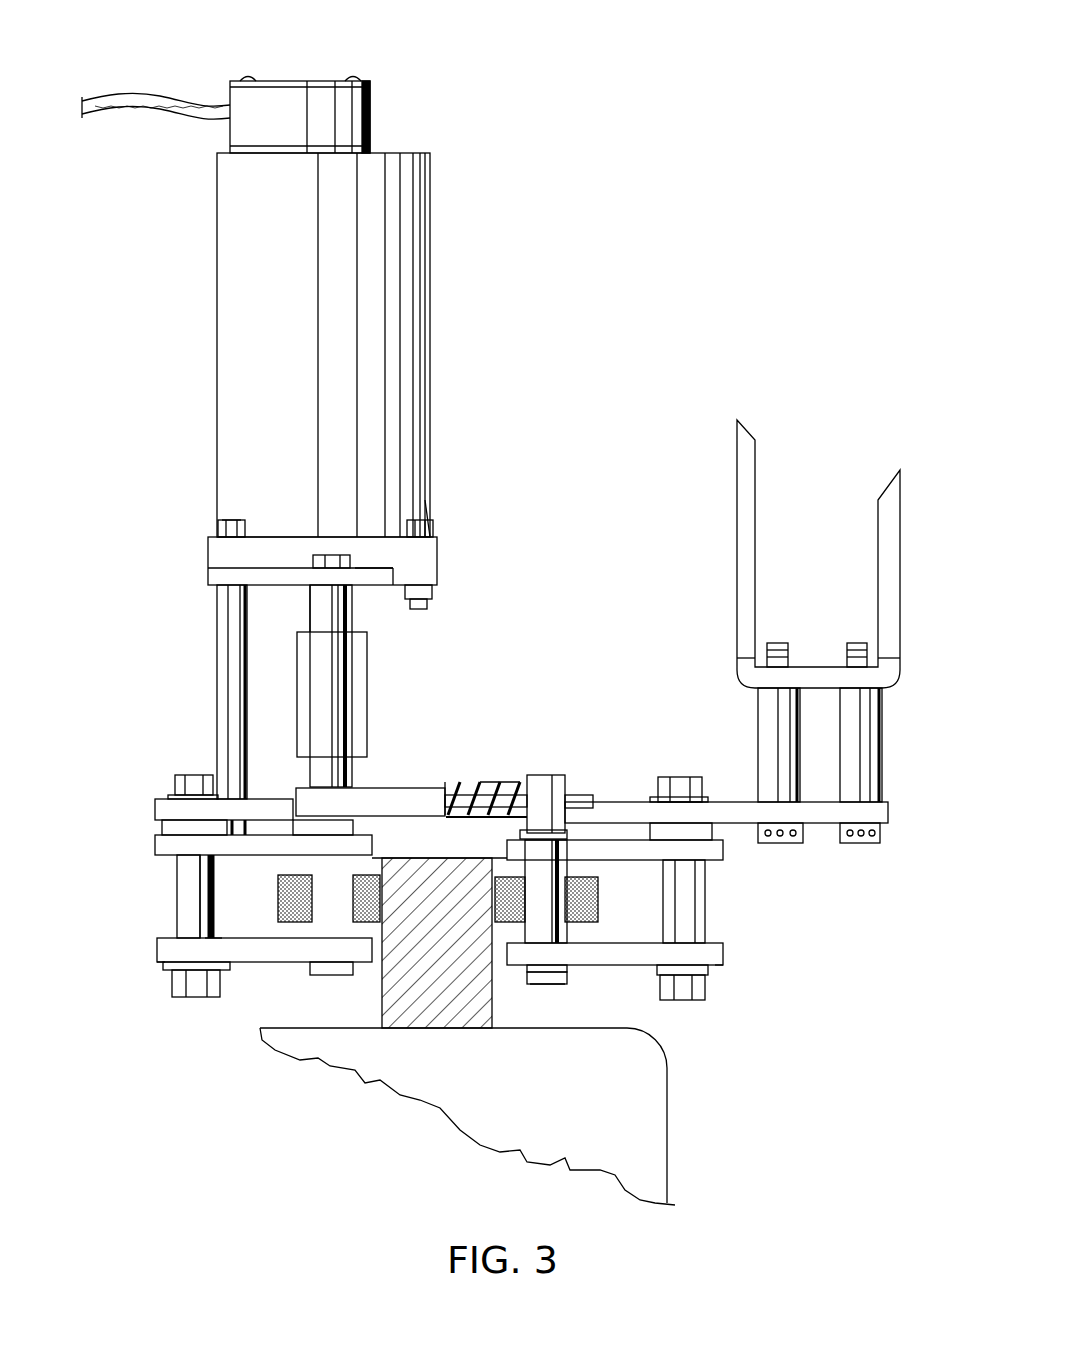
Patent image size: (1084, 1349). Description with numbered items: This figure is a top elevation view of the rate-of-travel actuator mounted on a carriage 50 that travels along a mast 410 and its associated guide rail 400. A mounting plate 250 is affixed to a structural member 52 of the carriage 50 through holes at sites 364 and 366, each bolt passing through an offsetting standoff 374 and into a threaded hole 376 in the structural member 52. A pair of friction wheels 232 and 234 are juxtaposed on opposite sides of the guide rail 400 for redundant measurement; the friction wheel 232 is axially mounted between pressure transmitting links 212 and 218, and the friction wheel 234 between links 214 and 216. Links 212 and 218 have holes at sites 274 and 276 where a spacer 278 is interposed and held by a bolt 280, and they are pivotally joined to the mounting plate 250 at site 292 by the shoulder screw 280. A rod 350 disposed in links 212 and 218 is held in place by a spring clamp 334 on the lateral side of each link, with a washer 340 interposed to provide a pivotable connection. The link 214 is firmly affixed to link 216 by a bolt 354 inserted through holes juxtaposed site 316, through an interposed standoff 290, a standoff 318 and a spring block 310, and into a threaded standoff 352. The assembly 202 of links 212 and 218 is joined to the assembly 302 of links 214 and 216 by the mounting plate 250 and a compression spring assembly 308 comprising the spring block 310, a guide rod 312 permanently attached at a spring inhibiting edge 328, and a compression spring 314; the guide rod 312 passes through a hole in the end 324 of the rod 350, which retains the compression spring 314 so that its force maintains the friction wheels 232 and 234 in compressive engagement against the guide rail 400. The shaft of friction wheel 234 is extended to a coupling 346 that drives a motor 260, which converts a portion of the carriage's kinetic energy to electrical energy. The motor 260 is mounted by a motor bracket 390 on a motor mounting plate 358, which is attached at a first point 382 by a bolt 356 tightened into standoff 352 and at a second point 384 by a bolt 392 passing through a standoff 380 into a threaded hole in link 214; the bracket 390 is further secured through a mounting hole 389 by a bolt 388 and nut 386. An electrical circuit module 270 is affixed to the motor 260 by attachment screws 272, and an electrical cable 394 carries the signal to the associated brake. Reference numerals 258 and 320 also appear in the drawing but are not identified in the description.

The carriage 50 is at (782, 651).
The structural member 52 is at (755, 600).
The assembly 202 is at (732, 972).
The pressure transmitting link 212 is at (725, 952).
The pressure transmitting link 214 is at (155, 845).
The pressure transmitting link 216 is at (157, 950).
The pressure transmitting link 218 is at (723, 852).
The friction wheel 232 is at (598, 892).
The friction wheel 234 is at (285, 910).
The mounting plate 250 is at (155, 806).
The bolt nut 258 is at (185, 775).
The motor 260 is at (430, 328).
The electrical circuit module 270 is at (372, 112).
The attachment screws 272 is at (248, 78).
The site 274 is at (218, 890).
The site 276 is at (218, 940).
The spacer 278 is at (177, 898).
The bolt 280 is at (190, 998).
The standoff 290 is at (402, 857).
The site 292 is at (700, 802).
The assembly 302 is at (155, 970).
The compression spring assembly 308 is at (460, 768).
The spring block 310 is at (428, 788).
The guide rod 312 is at (470, 790).
The compression spring 314 is at (482, 780).
The site 316 is at (312, 822).
The standoff 318 is at (240, 820).
The bolt end 320 is at (552, 985).
The end 324 is at (535, 775).
The spring inhibiting edge 328 is at (450, 782).
The spring clamp 334 is at (575, 830).
The washer 340 is at (592, 832).
The coupling 346 is at (367, 703).
The rod 350 is at (552, 775).
The threaded standoff 352 is at (352, 625).
The bolt 354 is at (325, 977).
The bolt 356 is at (360, 567).
The motor mounting plate 358 is at (302, 586).
The site 364 is at (795, 845).
The site 366 is at (882, 845).
The offsetting standoff 374 is at (775, 748).
The threaded hole 376 is at (740, 690).
The standoff 380 is at (217, 637).
The first point 382 is at (318, 556).
The second point 384 is at (218, 528).
The nut 386 is at (432, 592).
The bolt 388 is at (428, 522).
The mounting hole 389 is at (435, 530).
The motor bracket 390 is at (208, 560).
The bolt 392 is at (232, 519).
The electrical cable 394 is at (175, 110).
The guide rail 400 is at (470, 992).
The mast 410 is at (340, 1058).